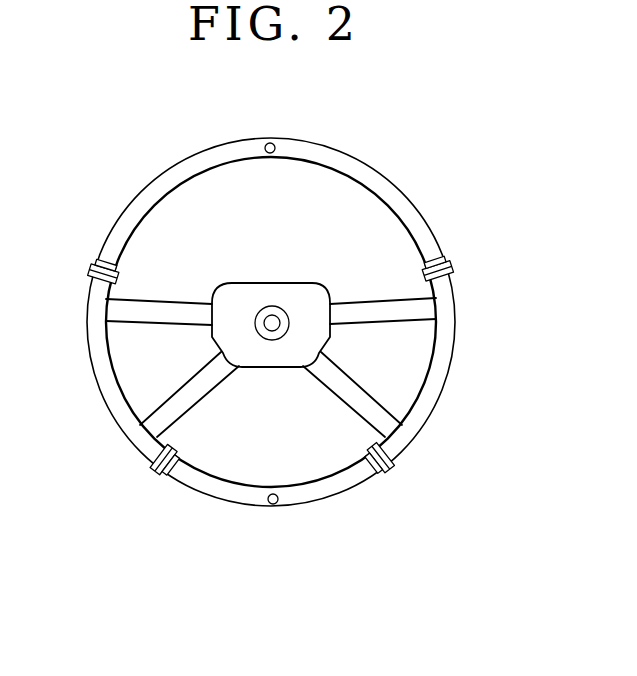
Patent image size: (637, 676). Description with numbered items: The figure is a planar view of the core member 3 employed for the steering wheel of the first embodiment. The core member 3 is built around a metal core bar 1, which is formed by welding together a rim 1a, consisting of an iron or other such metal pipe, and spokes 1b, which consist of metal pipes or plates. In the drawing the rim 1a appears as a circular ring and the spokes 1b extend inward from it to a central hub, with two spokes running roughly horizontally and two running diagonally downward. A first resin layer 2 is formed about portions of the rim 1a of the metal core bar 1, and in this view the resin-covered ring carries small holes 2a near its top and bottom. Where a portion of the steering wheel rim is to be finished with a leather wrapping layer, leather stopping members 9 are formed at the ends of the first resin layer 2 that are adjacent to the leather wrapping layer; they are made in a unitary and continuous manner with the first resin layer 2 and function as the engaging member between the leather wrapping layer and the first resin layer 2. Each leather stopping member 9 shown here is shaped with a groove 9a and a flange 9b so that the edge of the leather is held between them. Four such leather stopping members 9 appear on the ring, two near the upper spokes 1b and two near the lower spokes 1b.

The metal core bar 1 is at (495, 357).
The rim of the metal core bar 1a is at (437, 392).
The spokes of the metal core bar 1b is at (383, 407).
The first resin layer 2 is at (374, 170).
The hole 2a is at (266, 145).
The core member 3 is at (247, 570).
The leather stopping members 9 is at (512, 210).
The groove 9a is at (445, 262).
The flange 9b is at (447, 268).